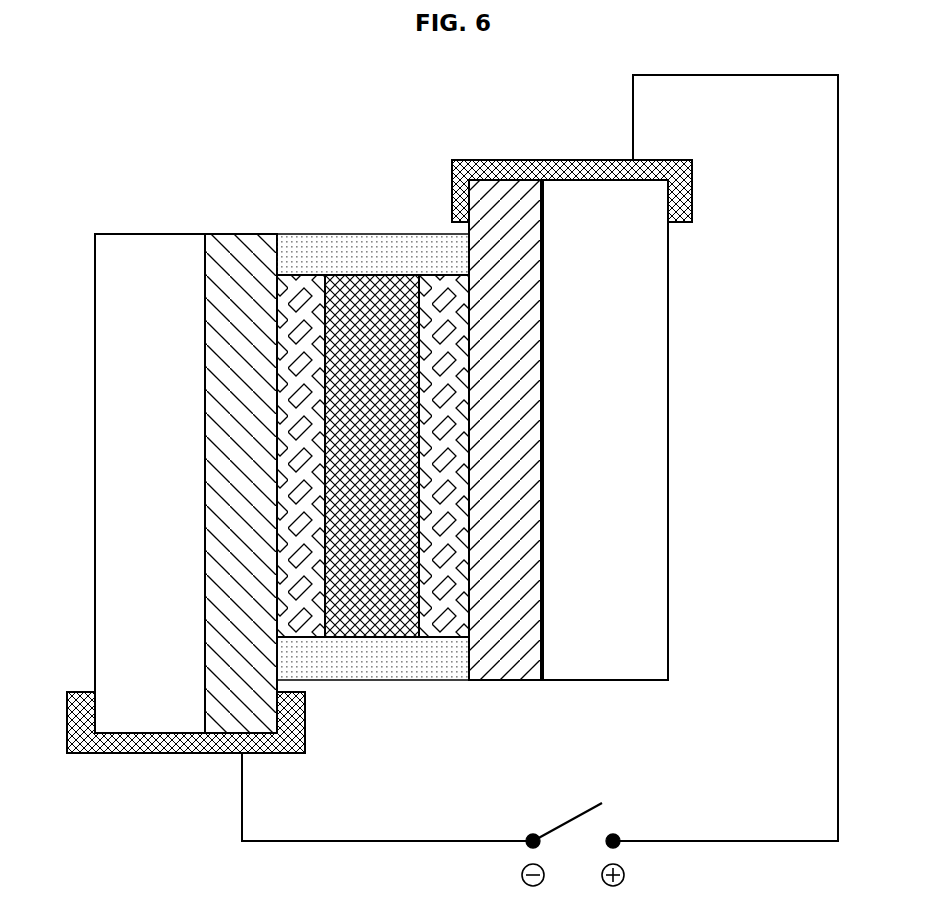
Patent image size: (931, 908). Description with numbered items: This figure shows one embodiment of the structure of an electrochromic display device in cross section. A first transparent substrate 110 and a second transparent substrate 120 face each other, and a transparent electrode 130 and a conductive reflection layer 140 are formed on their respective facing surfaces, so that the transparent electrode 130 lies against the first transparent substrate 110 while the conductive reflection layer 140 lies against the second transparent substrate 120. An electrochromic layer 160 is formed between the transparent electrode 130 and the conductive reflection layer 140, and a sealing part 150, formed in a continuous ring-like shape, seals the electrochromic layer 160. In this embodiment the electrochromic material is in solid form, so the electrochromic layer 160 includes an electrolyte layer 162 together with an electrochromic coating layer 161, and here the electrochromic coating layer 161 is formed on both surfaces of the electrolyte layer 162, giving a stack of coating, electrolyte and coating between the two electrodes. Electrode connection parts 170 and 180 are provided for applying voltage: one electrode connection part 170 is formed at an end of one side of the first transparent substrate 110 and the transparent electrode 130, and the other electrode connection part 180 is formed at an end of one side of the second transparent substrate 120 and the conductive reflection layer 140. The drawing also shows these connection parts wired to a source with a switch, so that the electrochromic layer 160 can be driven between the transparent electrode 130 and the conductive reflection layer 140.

The first transparent substrate 110 is at (147, 258).
The second transparent substrate 120 is at (593, 202).
The transparent electrode 130 is at (237, 258).
The conductive reflection layer 140 is at (495, 202).
The sealing part 150 is at (393, 258).
The electrochromic layer 160 is at (378, 544).
The electrochromic coating layer 161 is at (302, 637).
The electrolyte layer 162 is at (350, 630).
The electrode connection part 170 is at (188, 753).
The electrode connection part 180 is at (548, 175).